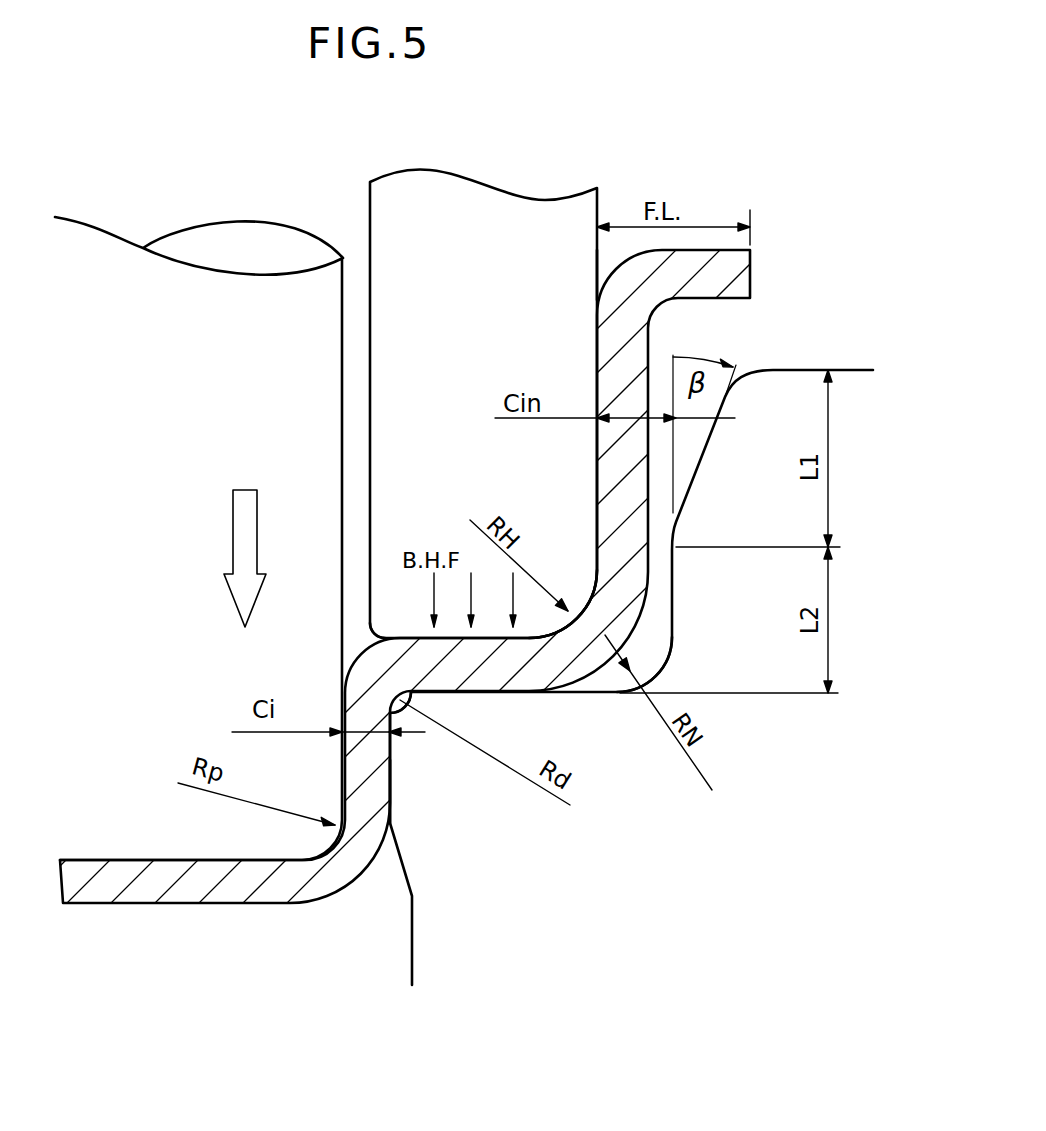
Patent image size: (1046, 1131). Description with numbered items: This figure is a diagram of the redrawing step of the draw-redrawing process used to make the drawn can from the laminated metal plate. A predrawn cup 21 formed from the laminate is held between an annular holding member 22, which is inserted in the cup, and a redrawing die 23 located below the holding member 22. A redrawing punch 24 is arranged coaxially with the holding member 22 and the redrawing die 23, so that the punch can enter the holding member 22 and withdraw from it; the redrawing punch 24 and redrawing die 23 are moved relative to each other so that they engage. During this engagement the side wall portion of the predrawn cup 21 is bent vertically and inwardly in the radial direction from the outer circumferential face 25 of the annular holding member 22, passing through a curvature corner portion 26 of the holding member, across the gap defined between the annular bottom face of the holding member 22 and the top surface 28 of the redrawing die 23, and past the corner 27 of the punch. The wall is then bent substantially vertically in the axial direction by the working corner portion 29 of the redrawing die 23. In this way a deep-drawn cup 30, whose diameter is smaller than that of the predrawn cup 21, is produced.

The predrawn cup 21 is at (625, 338).
The annular holding member 22 is at (471, 336).
The redrawing die 23 is at (588, 926).
The redrawing punch 24 is at (207, 428).
The outer circumferential face 25 is at (597, 262).
The corner portion of blank at punch shoulder 26 is at (583, 604).
The punch shoulder corner 27 is at (415, 638).
The top surface 28 is at (592, 693).
The working corner portion 29 is at (400, 698).
The deep-drawn cup 30 is at (372, 772).